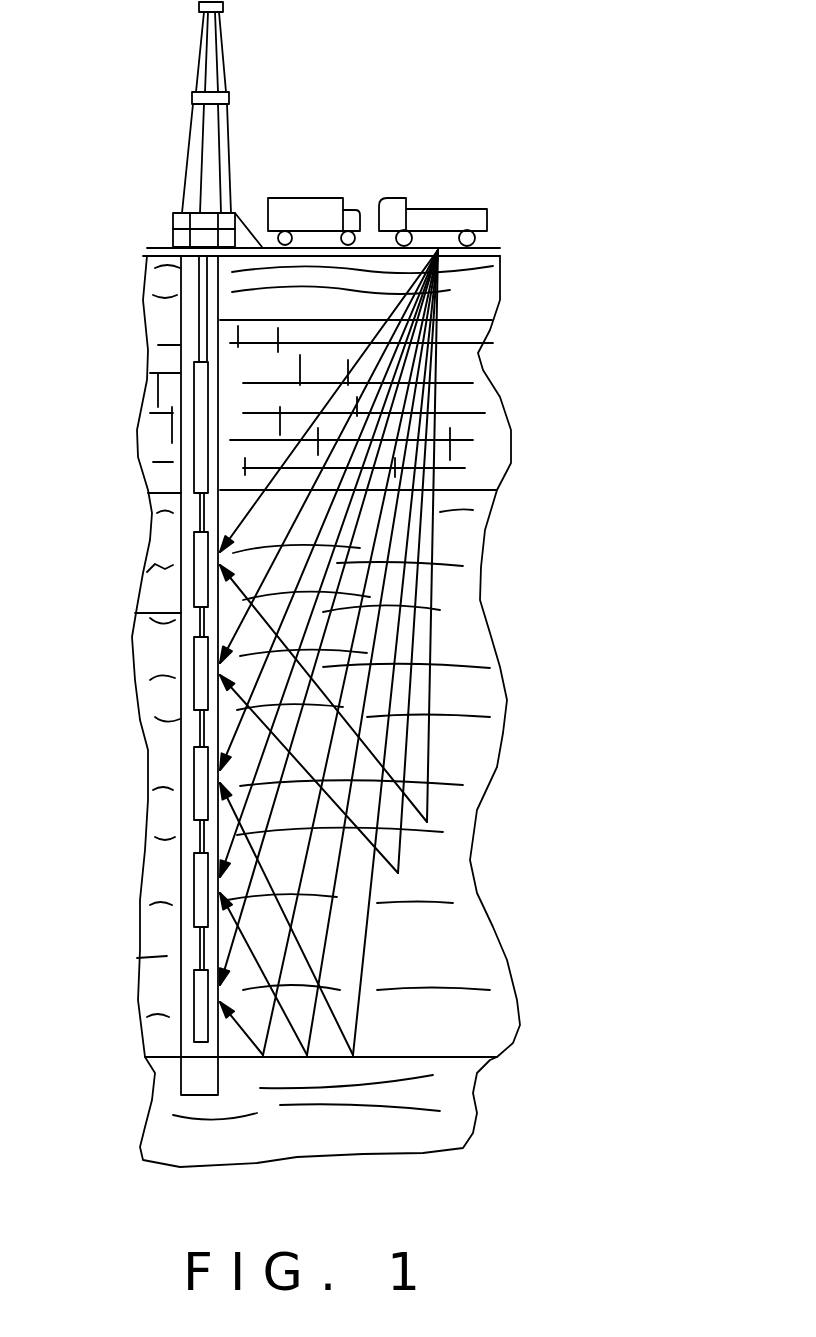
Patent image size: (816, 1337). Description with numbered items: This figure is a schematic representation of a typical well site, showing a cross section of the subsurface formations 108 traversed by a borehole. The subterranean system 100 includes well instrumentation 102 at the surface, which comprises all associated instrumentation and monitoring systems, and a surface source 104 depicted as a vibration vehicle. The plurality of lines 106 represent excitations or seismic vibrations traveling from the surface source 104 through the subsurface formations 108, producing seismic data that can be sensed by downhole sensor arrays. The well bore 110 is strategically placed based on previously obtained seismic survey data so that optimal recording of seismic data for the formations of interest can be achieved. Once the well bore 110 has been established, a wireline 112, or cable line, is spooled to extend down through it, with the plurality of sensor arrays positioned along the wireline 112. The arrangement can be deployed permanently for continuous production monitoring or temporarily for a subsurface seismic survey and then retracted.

The subterranean system 100 is at (417, 100).
The well instrumentation 102 is at (163, 212).
The surface source 104 is at (468, 195).
The plurality of lines 106 is at (437, 427).
The subsurface formations 108 is at (430, 868).
The well bore 110 is at (187, 512).
The wireline 112 is at (195, 615).